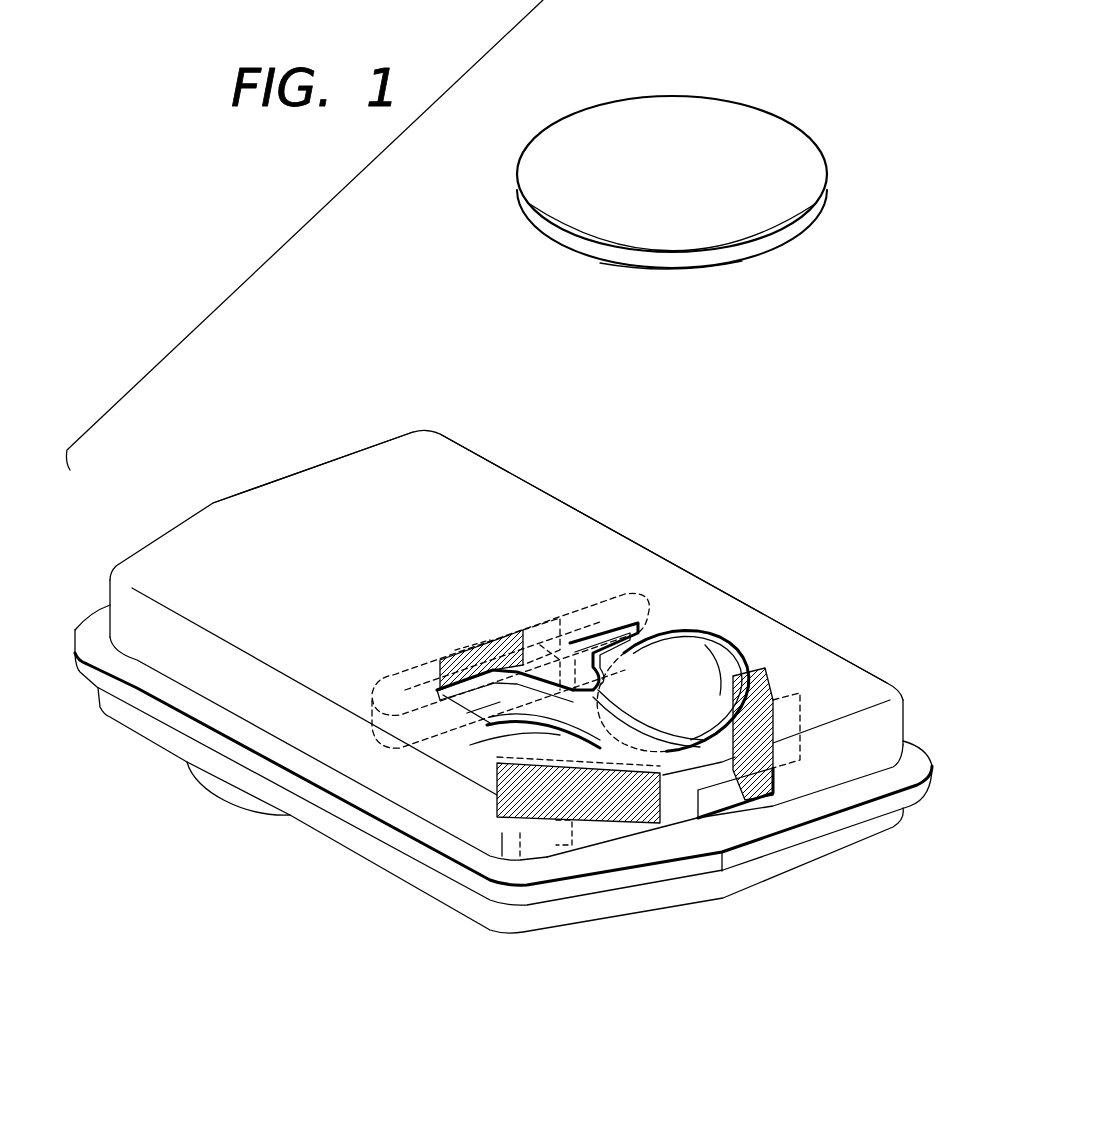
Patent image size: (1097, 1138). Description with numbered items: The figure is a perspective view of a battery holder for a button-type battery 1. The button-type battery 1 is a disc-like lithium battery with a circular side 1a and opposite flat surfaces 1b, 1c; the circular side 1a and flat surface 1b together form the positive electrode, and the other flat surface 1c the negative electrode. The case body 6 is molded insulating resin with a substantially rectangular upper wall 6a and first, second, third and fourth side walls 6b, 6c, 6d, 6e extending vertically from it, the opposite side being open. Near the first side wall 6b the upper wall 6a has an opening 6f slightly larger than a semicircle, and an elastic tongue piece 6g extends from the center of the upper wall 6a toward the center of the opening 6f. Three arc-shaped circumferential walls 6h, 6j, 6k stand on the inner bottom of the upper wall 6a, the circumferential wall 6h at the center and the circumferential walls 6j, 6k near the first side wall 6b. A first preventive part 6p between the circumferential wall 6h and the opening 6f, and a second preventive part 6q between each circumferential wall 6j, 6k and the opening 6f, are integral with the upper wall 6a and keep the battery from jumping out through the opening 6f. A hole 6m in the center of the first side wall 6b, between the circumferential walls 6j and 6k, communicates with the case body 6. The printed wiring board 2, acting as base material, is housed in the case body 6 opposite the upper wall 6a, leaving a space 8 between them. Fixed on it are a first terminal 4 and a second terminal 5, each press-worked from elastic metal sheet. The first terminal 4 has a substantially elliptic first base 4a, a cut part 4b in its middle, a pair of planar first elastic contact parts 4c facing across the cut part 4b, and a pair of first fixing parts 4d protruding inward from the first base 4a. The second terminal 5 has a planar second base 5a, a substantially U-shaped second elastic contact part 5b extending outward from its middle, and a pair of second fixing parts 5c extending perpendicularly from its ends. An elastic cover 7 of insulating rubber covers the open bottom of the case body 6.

The button-type battery 1 is at (786, 106).
The circular side 1a is at (773, 245).
The flat surface 1b is at (619, 125).
The flat surface 1c is at (645, 268).
The printed wiring board 2 is at (690, 652).
The first terminal 4 is at (422, 655).
The first base 4a is at (385, 665).
The cut part 4b is at (487, 722).
The first elastic contact parts 4c is at (630, 568).
The first fixing parts 4d is at (500, 640).
The second terminal 5 is at (528, 737).
The second base 5a is at (680, 822).
The second elastic contact part 5b is at (640, 719).
The second fixing parts 5c is at (562, 800).
The case body 6 is at (530, 478).
The upper wall 6a is at (368, 462).
The first side wall 6b is at (885, 745).
The second side wall 6c is at (288, 470).
The third side wall 6d is at (322, 745).
The fourth side wall 6e is at (615, 535).
The opening 6f is at (715, 637).
The tongue piece 6g is at (545, 650).
The circumferential wall 6h is at (470, 640).
The circumferential wall 6j is at (770, 680).
The circumferential wall 6k is at (520, 836).
The hole 6m is at (727, 805).
The first preventive part 6p is at (590, 640).
The second preventive part 6q is at (697, 737).
The elastic cover 7 is at (140, 735).
The space 8 is at (665, 615).